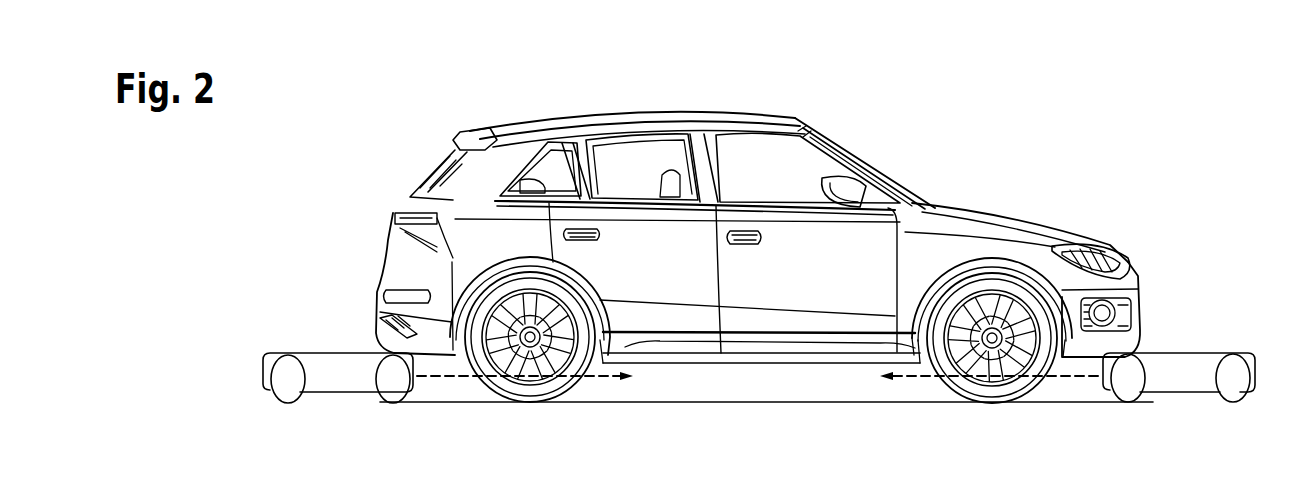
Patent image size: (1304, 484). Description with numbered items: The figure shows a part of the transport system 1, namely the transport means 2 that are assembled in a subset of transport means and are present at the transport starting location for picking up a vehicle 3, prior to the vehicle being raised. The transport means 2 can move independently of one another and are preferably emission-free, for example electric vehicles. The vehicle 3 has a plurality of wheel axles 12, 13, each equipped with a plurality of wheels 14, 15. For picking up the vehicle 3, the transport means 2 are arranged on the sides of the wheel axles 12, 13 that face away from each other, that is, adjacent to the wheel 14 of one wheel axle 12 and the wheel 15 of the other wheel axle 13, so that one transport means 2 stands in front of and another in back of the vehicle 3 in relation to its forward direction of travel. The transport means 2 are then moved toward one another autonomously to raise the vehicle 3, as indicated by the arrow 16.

The transport system 1 is at (1191, 150).
The transport means 2 is at (308, 336).
The vehicle 3 is at (927, 173).
The wheel axle 12 is at (471, 384).
The wheel axle 13 is at (1049, 387).
The wheel 14 is at (526, 392).
The wheel 15 is at (998, 393).
The arrow 16 is at (601, 381).